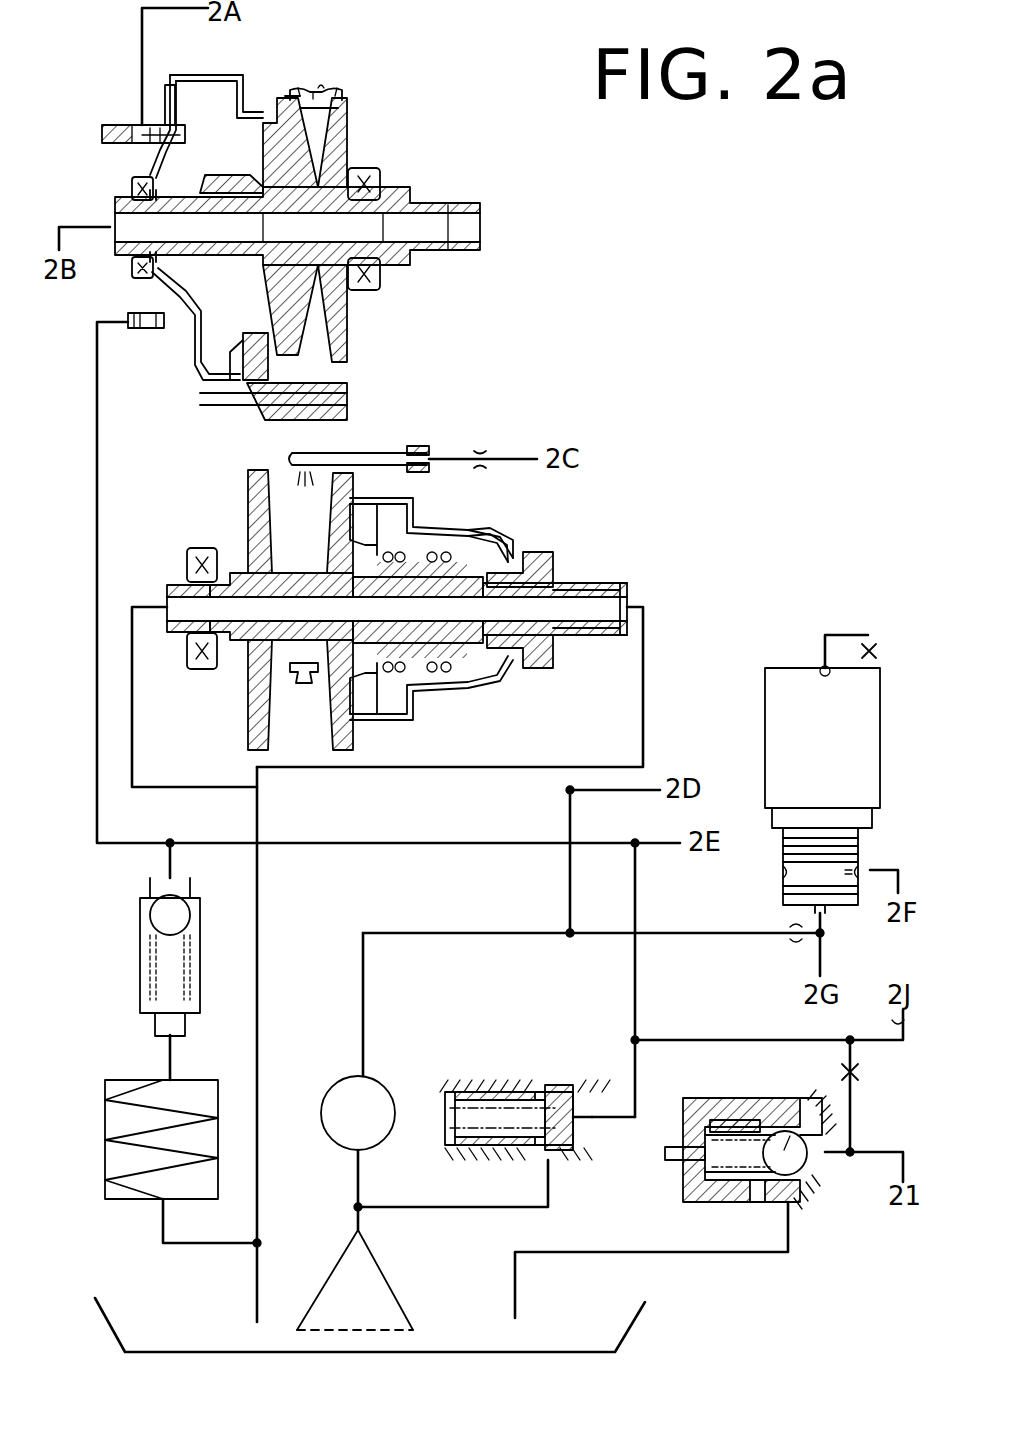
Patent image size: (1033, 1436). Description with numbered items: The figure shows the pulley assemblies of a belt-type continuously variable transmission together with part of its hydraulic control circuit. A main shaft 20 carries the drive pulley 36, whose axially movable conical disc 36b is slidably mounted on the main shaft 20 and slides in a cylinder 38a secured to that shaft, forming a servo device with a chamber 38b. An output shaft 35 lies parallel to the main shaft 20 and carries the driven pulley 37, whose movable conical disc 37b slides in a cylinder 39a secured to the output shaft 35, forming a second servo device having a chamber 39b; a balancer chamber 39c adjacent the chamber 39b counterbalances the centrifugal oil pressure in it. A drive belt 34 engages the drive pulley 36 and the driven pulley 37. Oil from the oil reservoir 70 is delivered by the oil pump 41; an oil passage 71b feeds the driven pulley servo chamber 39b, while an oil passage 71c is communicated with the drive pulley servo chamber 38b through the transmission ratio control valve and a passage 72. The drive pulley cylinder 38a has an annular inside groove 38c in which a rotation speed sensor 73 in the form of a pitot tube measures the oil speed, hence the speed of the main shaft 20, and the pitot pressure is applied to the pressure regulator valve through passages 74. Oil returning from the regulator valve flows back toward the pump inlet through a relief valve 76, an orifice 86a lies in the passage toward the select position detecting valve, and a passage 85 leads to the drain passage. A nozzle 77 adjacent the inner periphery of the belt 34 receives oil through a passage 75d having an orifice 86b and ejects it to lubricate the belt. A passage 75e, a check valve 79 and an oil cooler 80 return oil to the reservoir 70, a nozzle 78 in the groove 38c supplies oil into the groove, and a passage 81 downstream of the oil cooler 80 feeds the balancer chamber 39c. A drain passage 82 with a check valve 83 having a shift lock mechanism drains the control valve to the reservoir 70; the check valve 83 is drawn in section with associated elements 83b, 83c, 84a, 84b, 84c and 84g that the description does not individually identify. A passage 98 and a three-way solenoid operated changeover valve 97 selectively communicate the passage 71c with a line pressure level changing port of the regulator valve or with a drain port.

The main shaft 20 is at (410, 203).
The drive belt 34 is at (322, 88).
The output shaft 35 is at (556, 572).
The drive pulley 36 is at (94, 173).
The axially movable conical disc 36b is at (290, 96).
The driven pulley 37 is at (571, 516).
The movable conical disc 37b is at (338, 742).
The cylinder 38a is at (230, 75).
The chamber 38b is at (252, 160).
The annular inside groove 38c is at (173, 78).
The cylinder 39a is at (397, 715).
The chamber 39b is at (415, 500).
The balancer chamber 39c is at (488, 543).
The oil pump 41 is at (335, 1085).
The oil reservoir 70 is at (628, 1345).
The oil passage 71b is at (438, 770).
The oil passage 71c is at (822, 964).
The passage 72 is at (82, 222).
The rotation speed sensor 73 is at (165, 90).
The passages 74 is at (140, 45).
The passage 75d is at (530, 458).
The passage 75e is at (98, 516).
The relief valve 76 is at (490, 1090).
The nozzle 77 is at (395, 452).
The nozzle 78 is at (148, 333).
The check valve 79 is at (140, 960).
The oil cooler 80 is at (105, 1135).
The passage 81 is at (259, 882).
The drain passage 82 is at (900, 1172).
The check valve 83 is at (816, 1110).
The valve seat 83b is at (742, 1205).
The valve ball 83c is at (805, 1160).
The valve body 84a is at (695, 1110).
The valve spring 84b is at (730, 1118).
The drain port 84c is at (800, 1215).
The adjusting screw 84g is at (672, 1162).
The passage 85 is at (855, 1136).
The orifice 86a is at (870, 1063).
The orifice 86b is at (488, 445).
The solenoid operated changeover valve 97 is at (784, 678).
The passage 98 is at (908, 854).